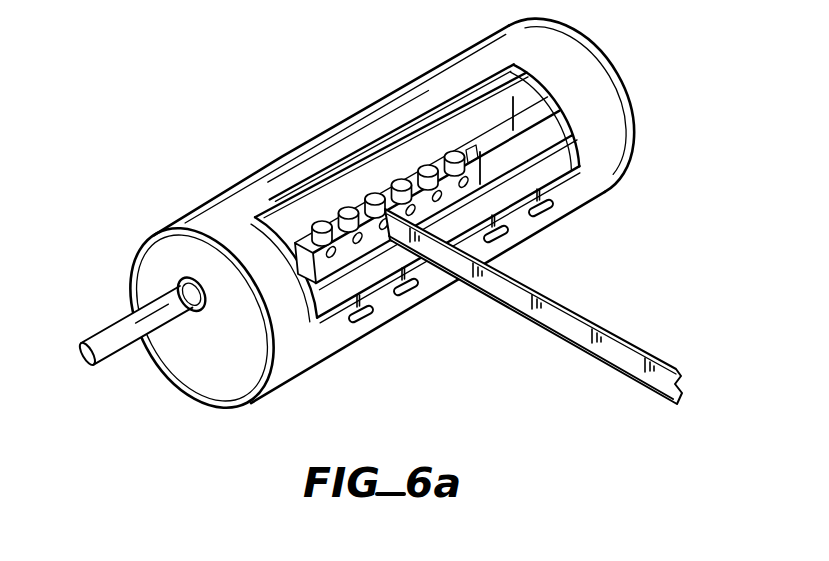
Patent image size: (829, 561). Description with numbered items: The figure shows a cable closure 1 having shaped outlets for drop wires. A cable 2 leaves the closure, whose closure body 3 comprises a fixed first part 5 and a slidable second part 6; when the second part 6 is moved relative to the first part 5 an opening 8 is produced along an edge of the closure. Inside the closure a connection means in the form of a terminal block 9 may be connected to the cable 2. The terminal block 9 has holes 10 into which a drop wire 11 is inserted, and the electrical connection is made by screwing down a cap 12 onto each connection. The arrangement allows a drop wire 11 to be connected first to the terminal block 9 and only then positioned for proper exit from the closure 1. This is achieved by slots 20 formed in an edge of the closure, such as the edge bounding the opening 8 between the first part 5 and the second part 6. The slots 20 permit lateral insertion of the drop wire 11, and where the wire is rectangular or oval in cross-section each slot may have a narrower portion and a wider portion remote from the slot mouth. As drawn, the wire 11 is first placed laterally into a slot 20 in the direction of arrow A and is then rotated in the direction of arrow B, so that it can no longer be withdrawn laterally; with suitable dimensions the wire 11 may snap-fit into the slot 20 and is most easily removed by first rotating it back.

The closure 1 is at (393, 216).
The cable 2 is at (163, 313).
The closure body 3 is at (280, 152).
The fixed first part 5 is at (223, 212).
The slidable second part 6 is at (540, 60).
The opening 8 is at (547, 174).
The terminal block 9 is at (470, 152).
The holes 10 is at (359, 236).
The drop wire 11 is at (588, 342).
The cap 12 is at (427, 166).
The slots 20 is at (405, 297).
The arrow A is at (450, 296).
The arrow B is at (487, 290).